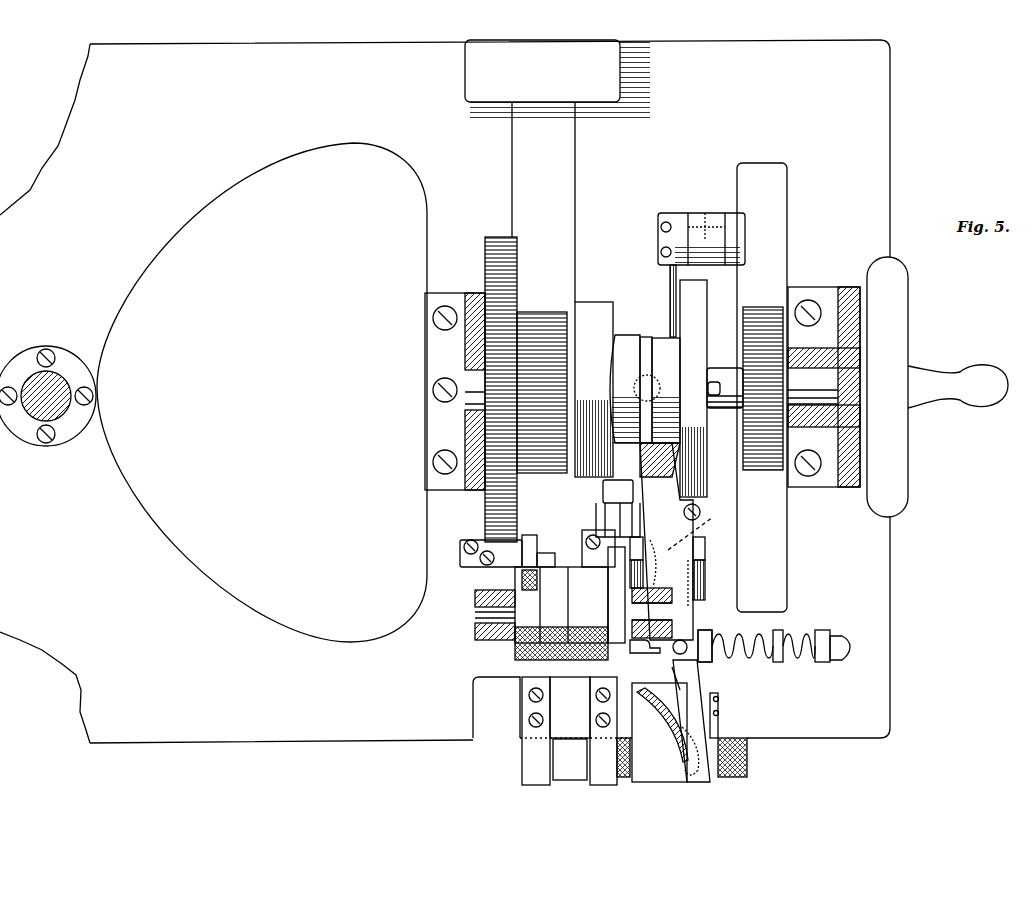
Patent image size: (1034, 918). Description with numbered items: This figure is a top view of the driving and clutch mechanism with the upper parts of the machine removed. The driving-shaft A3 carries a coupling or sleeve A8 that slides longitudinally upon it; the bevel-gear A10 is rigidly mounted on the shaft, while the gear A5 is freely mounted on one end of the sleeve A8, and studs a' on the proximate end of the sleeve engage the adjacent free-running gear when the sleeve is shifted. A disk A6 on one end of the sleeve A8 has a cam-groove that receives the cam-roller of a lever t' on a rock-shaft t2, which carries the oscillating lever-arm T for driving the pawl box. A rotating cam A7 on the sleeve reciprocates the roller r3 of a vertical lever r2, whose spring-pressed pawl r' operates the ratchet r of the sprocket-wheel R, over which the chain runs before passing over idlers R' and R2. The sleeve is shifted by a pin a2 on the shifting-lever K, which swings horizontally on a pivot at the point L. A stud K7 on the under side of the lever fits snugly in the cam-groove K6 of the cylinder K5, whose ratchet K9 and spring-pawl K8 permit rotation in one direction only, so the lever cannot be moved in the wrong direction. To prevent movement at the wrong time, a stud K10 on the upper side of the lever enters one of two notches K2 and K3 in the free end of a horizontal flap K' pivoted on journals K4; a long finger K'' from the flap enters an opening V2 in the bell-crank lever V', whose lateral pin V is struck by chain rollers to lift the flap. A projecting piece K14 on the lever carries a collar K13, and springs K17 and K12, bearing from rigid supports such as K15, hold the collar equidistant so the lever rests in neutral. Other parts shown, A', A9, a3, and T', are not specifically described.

The frame A' is at (445, 391).
The driving-shaft A3 is at (472, 386).
The gear A5 is at (538, 325).
The disk A6 is at (698, 347).
The rotating cam A7 is at (592, 314).
The coupling or sleeve A8 is at (618, 450).
The gear wheel A9 is at (760, 312).
The bevel-gear A10 is at (485, 262).
The studs a' is at (725, 388).
The pin a2 is at (652, 382).
The ring a3 is at (648, 337).
The oscillating lever-arm T is at (762, 387).
The bracket T' is at (701, 239).
The lever t' is at (661, 301).
The rock-shaft t2 is at (704, 216).
The lateral pin V is at (552, 554).
The bell-crank lever V' is at (505, 551).
The opening V2 is at (496, 707).
The sprocket-wheel R is at (545, 595).
The idler R' is at (576, 731).
The idler R2 is at (570, 760).
The ratchet r is at (590, 605).
The spring-pressed pawl r' is at (616, 595).
The vertical lever r2 is at (600, 525).
The roller r3 is at (618, 491).
The shifting-lever K is at (675, 612).
The horizontal flap K' is at (669, 573).
The notch K2 is at (681, 640).
The notch K3 is at (683, 678).
The journals K4 is at (705, 548).
The cylinder K5 is at (659, 732).
The cam-groove K6 is at (652, 702).
The stud K7 is at (688, 766).
The spring-pawl K8 is at (719, 735).
The ratchet K9 is at (747, 770).
The stud K10 is at (703, 631).
The long finger K'' is at (571, 658).
The spring K12 is at (823, 664).
The collar K13 is at (779, 664).
The projecting piece K14 is at (850, 646).
The rigid support K15 is at (826, 632).
The spring K17 is at (740, 634).
The pivot L is at (696, 529).